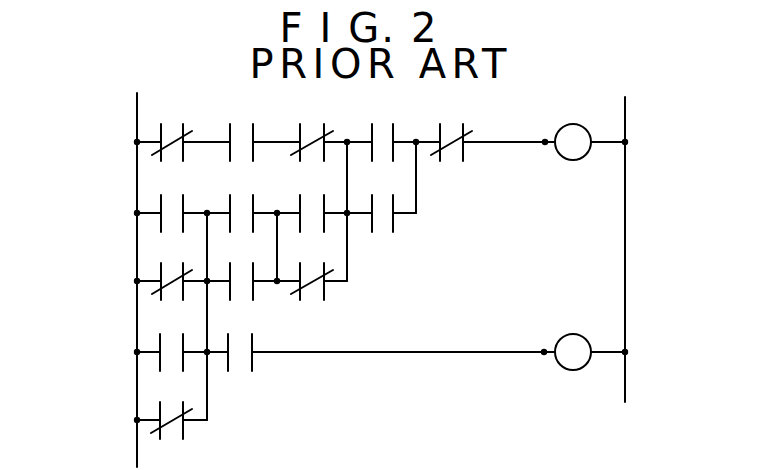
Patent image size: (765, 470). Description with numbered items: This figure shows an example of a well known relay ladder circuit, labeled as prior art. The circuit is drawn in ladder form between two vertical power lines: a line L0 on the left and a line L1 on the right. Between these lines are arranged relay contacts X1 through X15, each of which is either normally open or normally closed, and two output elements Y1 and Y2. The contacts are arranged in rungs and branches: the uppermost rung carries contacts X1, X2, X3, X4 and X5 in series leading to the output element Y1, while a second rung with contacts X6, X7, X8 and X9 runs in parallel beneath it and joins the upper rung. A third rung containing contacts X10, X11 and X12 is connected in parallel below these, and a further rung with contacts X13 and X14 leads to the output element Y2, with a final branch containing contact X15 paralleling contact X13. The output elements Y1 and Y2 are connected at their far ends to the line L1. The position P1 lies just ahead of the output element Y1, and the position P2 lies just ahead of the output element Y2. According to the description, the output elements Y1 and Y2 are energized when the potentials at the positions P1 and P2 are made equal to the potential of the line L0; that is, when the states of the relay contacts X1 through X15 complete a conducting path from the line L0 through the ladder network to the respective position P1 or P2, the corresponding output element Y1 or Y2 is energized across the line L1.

The relay contact X1 is at (172, 129).
The relay contact X2 is at (242, 129).
The relay contact X3 is at (312, 129).
The relay contact X4 is at (382, 129).
The relay contact X5 is at (451, 129).
The relay contact X6 is at (170, 200).
The relay contact X7 is at (242, 200).
The relay contact X8 is at (312, 200).
The relay contact X9 is at (382, 200).
The relay contact X10 is at (172, 268).
The relay contact X11 is at (240, 268).
The relay contact X12 is at (312, 268).
The relay contact X13 is at (170, 338).
The relay contact X14 is at (240, 338).
The relay contact X15 is at (171, 407).
The output element Y1 is at (573, 128).
The output element Y2 is at (573, 338).
The position P1 is at (545, 145).
The position P2 is at (544, 355).
The line L0 is at (137, 452).
The line L1 is at (625, 387).